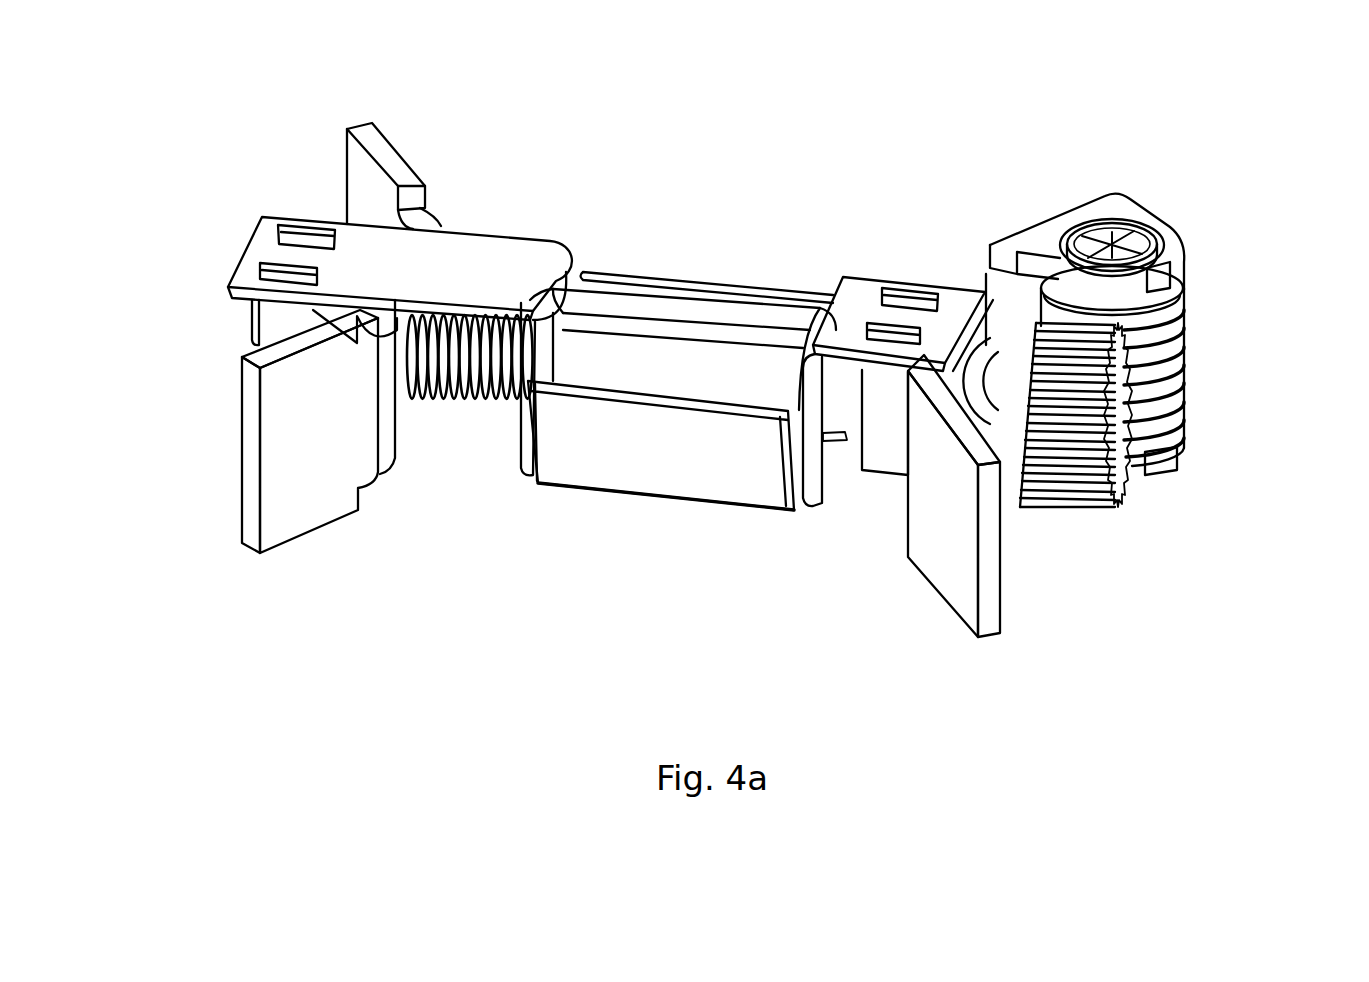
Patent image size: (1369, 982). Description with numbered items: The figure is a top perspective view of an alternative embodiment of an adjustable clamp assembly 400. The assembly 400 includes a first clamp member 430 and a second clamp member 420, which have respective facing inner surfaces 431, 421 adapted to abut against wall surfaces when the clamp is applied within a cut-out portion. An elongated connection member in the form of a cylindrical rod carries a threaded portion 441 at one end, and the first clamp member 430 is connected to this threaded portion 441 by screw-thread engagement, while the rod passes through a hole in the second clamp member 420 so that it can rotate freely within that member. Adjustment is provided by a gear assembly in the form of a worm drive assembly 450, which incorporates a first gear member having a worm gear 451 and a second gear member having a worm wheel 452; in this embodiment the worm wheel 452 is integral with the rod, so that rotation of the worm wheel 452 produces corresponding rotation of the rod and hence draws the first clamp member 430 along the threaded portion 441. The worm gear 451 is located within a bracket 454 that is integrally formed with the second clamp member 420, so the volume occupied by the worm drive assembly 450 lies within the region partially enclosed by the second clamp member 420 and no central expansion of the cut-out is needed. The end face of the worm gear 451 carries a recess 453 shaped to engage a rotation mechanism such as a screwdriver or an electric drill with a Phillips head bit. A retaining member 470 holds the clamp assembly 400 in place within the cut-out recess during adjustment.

The adjustable clamp assembly 400 is at (745, 173).
The second clamp member 420 is at (988, 563).
The inner surface 421 is at (957, 543).
The first clamp member 430 is at (245, 447).
The inner surface 431 is at (293, 500).
The threaded portion 441 is at (430, 395).
The worm drive assembly 450 is at (1218, 265).
The worm gear 451 is at (1190, 333).
The worm wheel 452 is at (1060, 487).
The recess 453 is at (1097, 240).
The bracket 454 is at (1117, 210).
The retaining member 470 is at (487, 262).